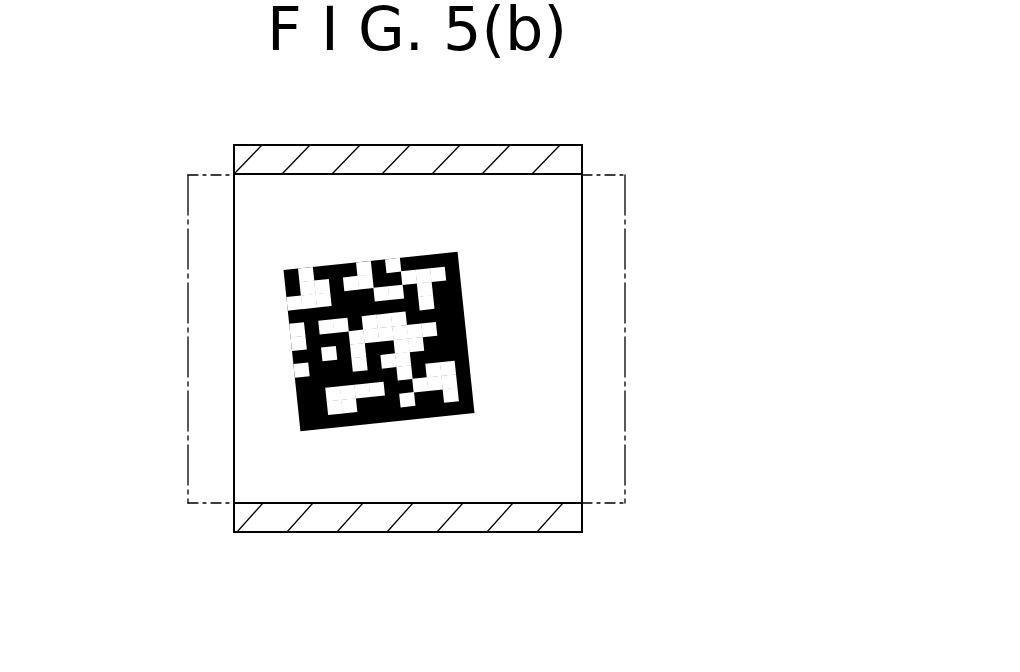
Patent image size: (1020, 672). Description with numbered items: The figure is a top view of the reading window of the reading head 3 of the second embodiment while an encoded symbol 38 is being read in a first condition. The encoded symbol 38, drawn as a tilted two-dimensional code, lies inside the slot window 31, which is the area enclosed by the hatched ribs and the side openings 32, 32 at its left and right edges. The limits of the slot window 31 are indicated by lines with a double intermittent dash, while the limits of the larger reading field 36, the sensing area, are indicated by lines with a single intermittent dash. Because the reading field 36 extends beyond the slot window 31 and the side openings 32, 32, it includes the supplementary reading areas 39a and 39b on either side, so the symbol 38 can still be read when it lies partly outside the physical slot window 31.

The reading head 3 is at (363, 532).
The slot window 31 is at (582, 207).
The side openings 32 is at (253, 328).
The reading field 36 is at (625, 420).
The encoded symbol 38 is at (330, 384).
The supplementary reading area 39a is at (610, 483).
The supplementary reading area 39b is at (212, 477).